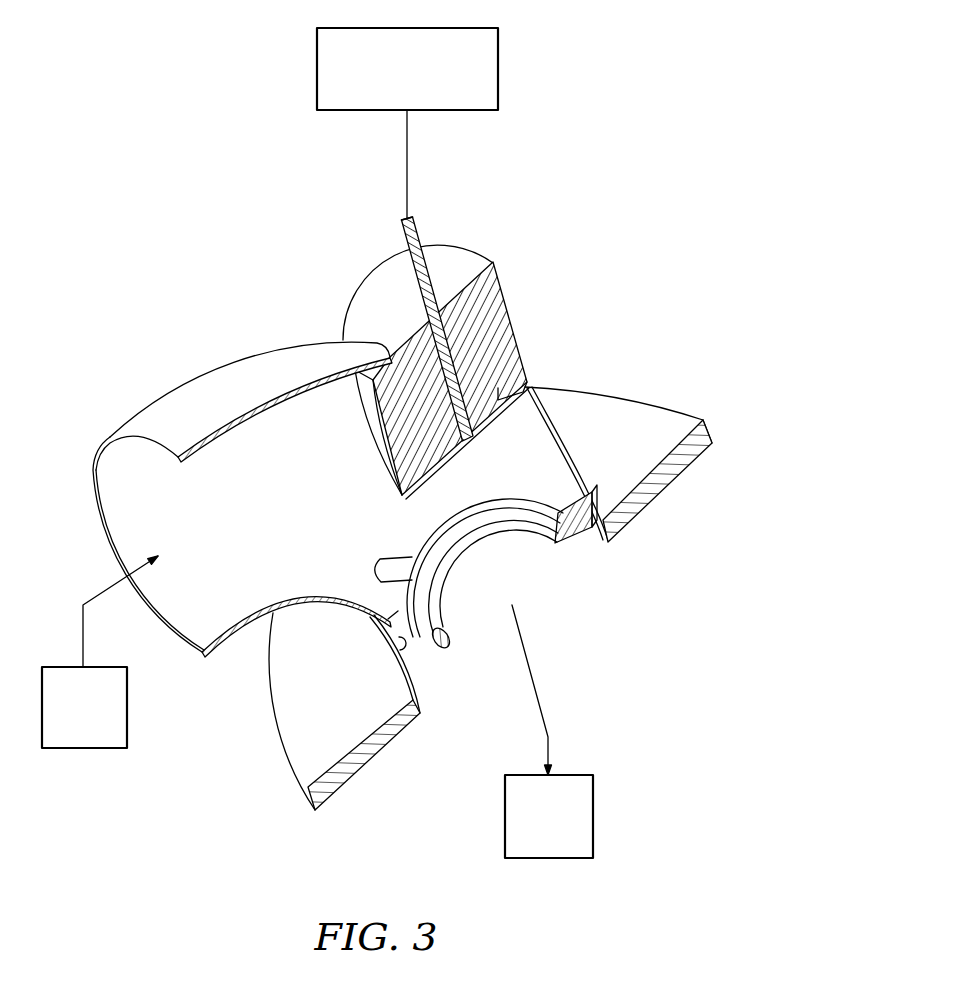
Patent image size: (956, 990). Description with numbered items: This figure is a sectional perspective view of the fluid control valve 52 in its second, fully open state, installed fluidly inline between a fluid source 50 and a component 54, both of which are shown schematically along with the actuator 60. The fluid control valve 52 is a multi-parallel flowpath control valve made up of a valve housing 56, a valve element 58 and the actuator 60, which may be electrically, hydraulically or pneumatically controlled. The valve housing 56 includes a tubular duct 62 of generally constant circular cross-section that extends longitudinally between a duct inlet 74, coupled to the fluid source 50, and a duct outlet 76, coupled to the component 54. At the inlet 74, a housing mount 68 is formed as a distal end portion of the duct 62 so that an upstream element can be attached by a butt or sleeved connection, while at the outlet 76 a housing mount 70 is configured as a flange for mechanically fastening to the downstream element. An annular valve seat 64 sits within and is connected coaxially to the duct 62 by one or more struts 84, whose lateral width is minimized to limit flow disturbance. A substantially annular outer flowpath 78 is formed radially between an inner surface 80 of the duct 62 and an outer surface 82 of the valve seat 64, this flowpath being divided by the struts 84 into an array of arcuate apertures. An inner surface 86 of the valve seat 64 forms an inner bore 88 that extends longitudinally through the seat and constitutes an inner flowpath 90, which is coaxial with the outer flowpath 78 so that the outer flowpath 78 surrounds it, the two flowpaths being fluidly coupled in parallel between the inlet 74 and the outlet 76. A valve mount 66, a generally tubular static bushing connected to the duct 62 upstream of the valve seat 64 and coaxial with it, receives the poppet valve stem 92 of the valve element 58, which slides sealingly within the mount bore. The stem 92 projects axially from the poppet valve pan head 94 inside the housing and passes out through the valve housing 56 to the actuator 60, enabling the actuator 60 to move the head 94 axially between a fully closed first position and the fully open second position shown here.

The fluid source 50 is at (69, 723).
The fluid control valve 52 is at (593, 227).
The component 54 is at (534, 830).
The valve housing 56 is at (232, 357).
The valve element 58 is at (425, 235).
The actuator 60 is at (498, 62).
The tubular duct 62 is at (270, 357).
The annular valve seat 64 is at (447, 643).
The valve mount 66 is at (512, 308).
The housing mount 68 is at (128, 432).
The housing mount 70 is at (667, 408).
The duct inlet 74 is at (197, 620).
The duct outlet 76 is at (592, 552).
The outer flowpath 78 is at (224, 526).
The inner surface of the duct 80 is at (396, 641).
The outer surface of the valve seat 82 is at (397, 620).
The strut 84 is at (385, 562).
The inner surface of the valve seat 86 is at (433, 608).
The inner bore 88 is at (520, 558).
The inner flowpath 90 is at (515, 582).
The poppet valve stem 92 is at (404, 235).
The poppet valve pan head 94 is at (527, 383).